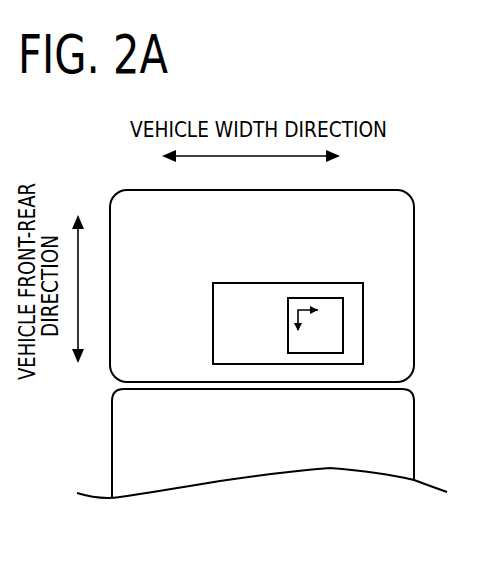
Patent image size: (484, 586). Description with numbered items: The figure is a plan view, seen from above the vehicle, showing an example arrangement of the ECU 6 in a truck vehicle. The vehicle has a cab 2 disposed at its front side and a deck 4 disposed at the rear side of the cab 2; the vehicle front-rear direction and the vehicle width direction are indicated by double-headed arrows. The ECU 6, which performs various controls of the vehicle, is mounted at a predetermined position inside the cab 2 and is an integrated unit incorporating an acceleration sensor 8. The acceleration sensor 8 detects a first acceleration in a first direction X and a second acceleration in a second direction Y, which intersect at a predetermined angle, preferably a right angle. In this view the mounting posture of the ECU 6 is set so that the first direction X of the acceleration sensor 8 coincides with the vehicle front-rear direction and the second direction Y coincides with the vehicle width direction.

The cab 2 is at (415, 288).
The deck 4 is at (415, 440).
The ECU 6 is at (241, 283).
The acceleration sensor 8 is at (316, 298).